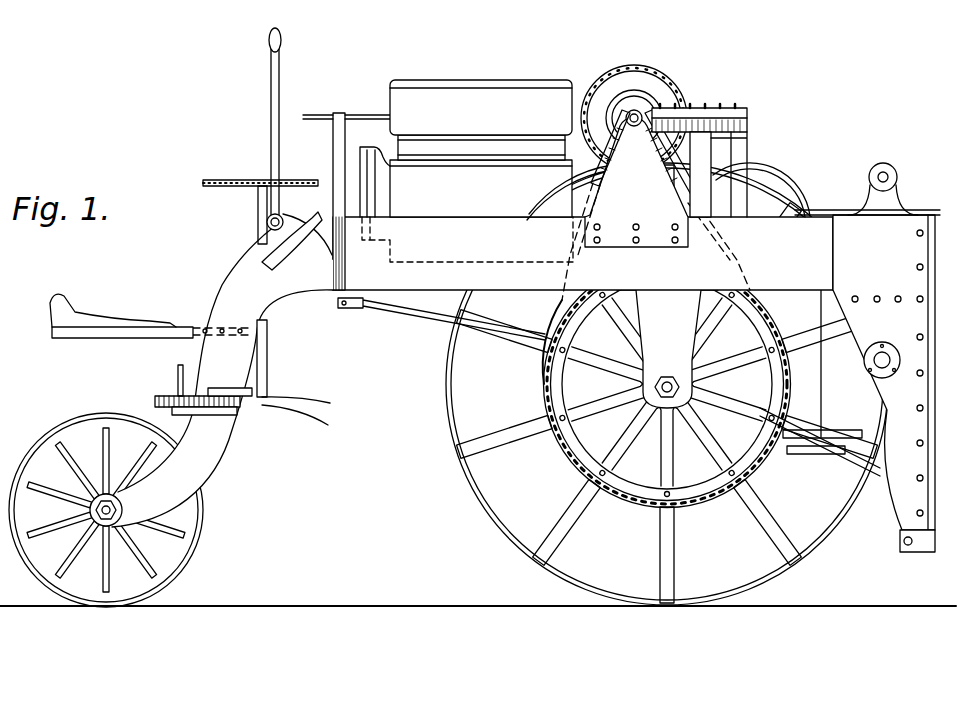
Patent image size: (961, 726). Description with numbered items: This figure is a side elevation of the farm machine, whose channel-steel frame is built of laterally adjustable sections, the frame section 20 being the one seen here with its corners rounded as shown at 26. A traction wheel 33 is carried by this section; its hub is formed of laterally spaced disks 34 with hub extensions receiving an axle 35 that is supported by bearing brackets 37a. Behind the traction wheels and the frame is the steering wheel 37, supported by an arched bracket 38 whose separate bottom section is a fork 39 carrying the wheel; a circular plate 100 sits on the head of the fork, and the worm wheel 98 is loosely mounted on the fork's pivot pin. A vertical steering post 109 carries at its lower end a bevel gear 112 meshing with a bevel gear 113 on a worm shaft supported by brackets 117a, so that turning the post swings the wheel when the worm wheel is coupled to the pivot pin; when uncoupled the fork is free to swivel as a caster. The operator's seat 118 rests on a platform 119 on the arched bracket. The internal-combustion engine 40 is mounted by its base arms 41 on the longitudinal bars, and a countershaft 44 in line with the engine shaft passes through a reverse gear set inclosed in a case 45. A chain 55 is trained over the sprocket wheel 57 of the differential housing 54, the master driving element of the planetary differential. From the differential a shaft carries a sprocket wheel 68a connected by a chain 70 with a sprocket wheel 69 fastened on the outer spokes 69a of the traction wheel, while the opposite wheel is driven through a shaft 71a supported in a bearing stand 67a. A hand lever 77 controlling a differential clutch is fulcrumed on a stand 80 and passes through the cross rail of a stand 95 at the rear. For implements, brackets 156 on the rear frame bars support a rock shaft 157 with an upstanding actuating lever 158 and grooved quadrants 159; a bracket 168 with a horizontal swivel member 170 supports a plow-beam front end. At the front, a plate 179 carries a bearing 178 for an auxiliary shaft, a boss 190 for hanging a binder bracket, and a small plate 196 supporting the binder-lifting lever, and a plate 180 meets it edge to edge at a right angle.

The frame section 20 is at (583, 253).
The rounded frame corner 26 is at (333, 298).
The traction wheel 33 is at (458, 512).
The hub disk 34 is at (620, 380).
The axle 35 is at (667, 375).
The steering wheel 37 is at (62, 438).
The bearing bracket 37a is at (667, 335).
The arched bracket 38 is at (212, 312).
The fork 39 is at (196, 460).
The internal-combustion engine 40 is at (481, 120).
The base arms 41 is at (412, 215).
The countershaft 44 is at (815, 208).
The gear case 45 is at (752, 165).
The differential housing 54 is at (645, 90).
The chain 55 is at (692, 106).
The sprocket wheel 57 is at (624, 66).
The bearing stand 67a is at (636, 182).
The sprocket wheel 68a is at (690, 92).
The sprocket wheel 69 is at (548, 370).
The outer spokes 69a is at (546, 430).
The chain 70 is at (580, 180).
The shaft 71a is at (650, 106).
The hand lever 77 is at (355, 102).
The stand 80 is at (706, 160).
The stand 95 is at (333, 147).
The worm wheel 98 is at (157, 400).
The circular plate 100 is at (242, 413).
The steering post 109 is at (268, 360).
The bevel gear 112 is at (330, 403).
The bevel gear 113 is at (319, 424).
The brackets 117a is at (262, 388).
The seat 118 is at (92, 315).
The platform 119 is at (85, 338).
The brackets 156 is at (264, 250).
The rock shaft 157 is at (267, 220).
The actuating lever 158 is at (271, 78).
The quadrant 159 is at (282, 262).
The bracket 168 is at (835, 440).
The swivel member 170 is at (793, 457).
The bearing 178 is at (883, 163).
The plate 179 is at (833, 262).
The plate 180 is at (930, 286).
The boss 190 is at (892, 330).
The small plate 196 is at (900, 545).